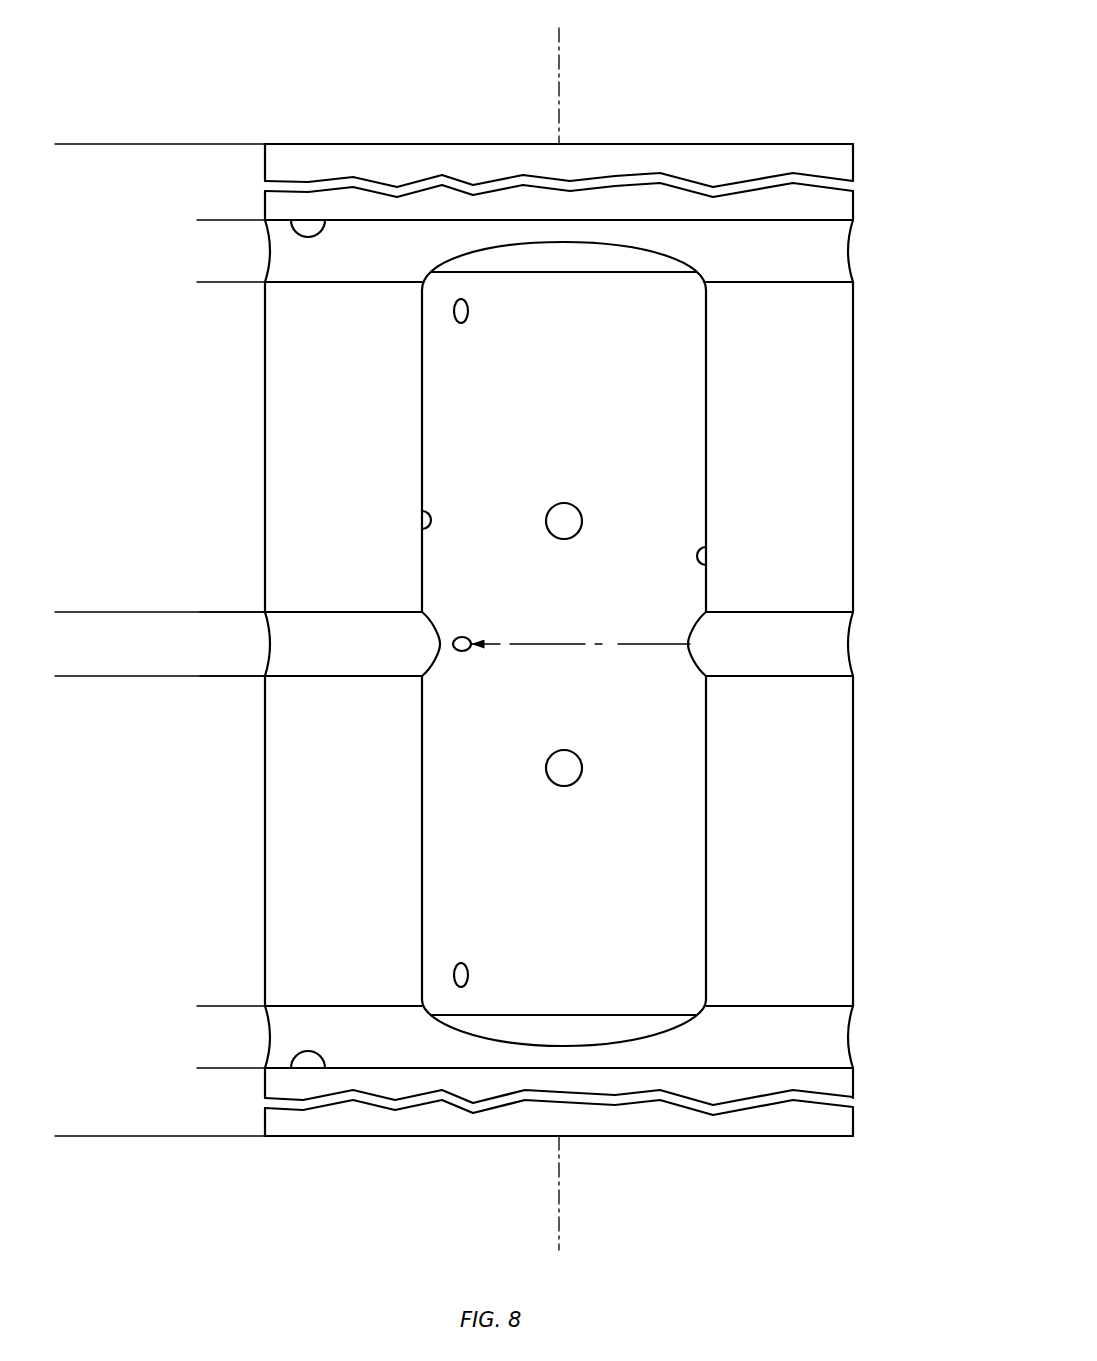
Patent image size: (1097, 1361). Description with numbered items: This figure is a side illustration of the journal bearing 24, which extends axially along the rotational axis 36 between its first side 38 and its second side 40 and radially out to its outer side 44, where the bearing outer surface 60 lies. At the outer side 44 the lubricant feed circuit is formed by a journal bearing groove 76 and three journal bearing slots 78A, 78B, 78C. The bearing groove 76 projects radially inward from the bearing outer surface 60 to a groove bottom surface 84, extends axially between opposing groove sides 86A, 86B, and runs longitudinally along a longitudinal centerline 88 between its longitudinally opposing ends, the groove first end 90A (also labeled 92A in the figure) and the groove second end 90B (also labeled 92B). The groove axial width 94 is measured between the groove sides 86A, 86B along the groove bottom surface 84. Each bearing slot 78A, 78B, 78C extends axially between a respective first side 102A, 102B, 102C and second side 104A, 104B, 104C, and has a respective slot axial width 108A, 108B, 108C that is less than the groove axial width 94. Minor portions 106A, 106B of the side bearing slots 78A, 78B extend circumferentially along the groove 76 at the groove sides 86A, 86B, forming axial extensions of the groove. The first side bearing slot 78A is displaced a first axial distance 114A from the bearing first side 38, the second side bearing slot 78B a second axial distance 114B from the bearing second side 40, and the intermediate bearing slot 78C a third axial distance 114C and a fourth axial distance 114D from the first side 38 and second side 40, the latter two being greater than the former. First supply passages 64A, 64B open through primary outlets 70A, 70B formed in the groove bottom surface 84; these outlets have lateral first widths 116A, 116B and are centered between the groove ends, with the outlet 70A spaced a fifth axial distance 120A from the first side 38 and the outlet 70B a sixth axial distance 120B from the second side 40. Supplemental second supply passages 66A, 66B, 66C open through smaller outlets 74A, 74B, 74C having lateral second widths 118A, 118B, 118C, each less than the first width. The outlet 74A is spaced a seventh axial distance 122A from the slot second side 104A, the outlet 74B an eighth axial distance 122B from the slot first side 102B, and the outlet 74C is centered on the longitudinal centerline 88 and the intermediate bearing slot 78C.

The journal bearing 24 is at (838, 78).
The rotational axis 36 is at (559, 28).
The first side of the journal bearing 38 is at (773, 144).
The second side of the journal bearing 40 is at (777, 1137).
The outer side of the journal bearing 44 is at (612, 640).
The bearing outer surface 60 is at (833, 350).
The first supply passage 64A is at (607, 549).
The outlet of first supply passage 70A is at (582, 521).
The first supply passage 64B is at (615, 794).
The outlet of first supply passage 70B is at (582, 768).
The second supply passage 66A is at (380, 340).
The outlet of second supply passage 74A is at (453, 318).
The second supply passage 66B is at (380, 947).
The outlet of second supply passage 74B is at (453, 968).
The second supply passage 66C is at (399, 704).
The outlet of second supply passage 74C is at (453, 648).
The journal bearing groove 76 is at (672, 430).
The first side bearing slot 78A is at (853, 250).
The second side bearing slot 78B is at (853, 1037).
The intermediate bearing slot 78C is at (853, 644).
The groove bottom surface 84 is at (672, 769).
The groove first side 86A is at (612, 262).
The groove second side 86B is at (612, 1028).
The longitudinal centerline 88 is at (600, 646).
The groove first end 90A is at (769, 546).
The first side opening 92A is at (702, 548).
The groove second end 90B is at (359, 509).
The second side opening 92B is at (418, 512).
The groove axial width 94 is at (499, 1015).
The first side of first side bearing slot 102A is at (294, 230).
The first side of second side bearing slot 102B is at (352, 1007).
The first side of intermediate bearing slot 102C is at (326, 613).
The second side of first side bearing slot 104A is at (351, 282).
The second side of second side bearing slot 104B is at (290, 1050).
The second side of intermediate bearing slot 104C is at (347, 676).
The minor portion of first side bearing slot 106A is at (508, 220).
The minor portion of second side bearing slot 106B is at (508, 1068).
The slot axial width 108A is at (207, 220).
The slot axial width 108B is at (215, 1006).
The slot axial width 108C is at (213, 612).
The first axial distance 114A is at (207, 144).
The second axial distance 114B is at (215, 1068).
The third axial distance 114C is at (69, 144).
The fourth axial distance 114D is at (69, 676).
The lateral first width 116A is at (564, 560).
The lateral first width 116B is at (564, 715).
The lateral second width 118A is at (461, 263).
The lateral second width 118B is at (461, 1023).
The lateral second width 118C is at (415, 644).
The fifth axial distance 120A is at (533, 144).
The sixth axial distance 120B is at (563, 768).
The seventh axial distance 122A is at (457, 300).
The eighth axial distance 122B is at (470, 989).